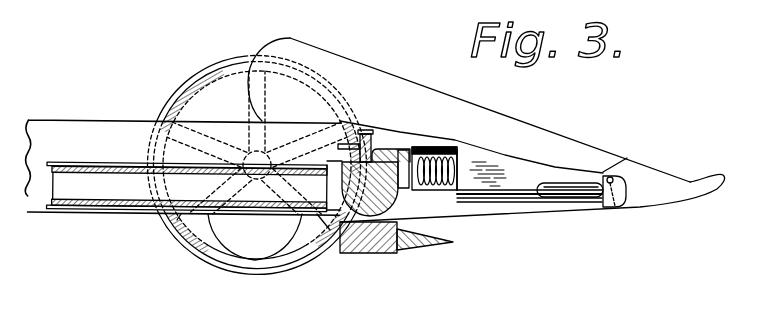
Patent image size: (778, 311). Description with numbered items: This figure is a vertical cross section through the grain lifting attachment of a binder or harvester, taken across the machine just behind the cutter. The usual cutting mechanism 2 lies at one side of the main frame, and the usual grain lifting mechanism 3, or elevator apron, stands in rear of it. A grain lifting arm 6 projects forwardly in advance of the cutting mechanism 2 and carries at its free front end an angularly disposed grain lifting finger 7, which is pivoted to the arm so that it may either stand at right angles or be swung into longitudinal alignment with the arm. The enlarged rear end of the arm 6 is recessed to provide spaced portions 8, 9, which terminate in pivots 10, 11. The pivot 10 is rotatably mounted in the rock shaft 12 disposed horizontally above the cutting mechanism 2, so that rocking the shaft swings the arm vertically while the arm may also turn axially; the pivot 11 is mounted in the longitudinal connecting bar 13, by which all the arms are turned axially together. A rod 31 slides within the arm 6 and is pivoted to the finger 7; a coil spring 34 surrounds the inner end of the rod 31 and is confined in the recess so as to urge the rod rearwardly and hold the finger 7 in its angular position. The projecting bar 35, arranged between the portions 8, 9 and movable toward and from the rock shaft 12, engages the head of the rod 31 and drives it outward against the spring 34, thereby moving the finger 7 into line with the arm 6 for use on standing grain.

The cutting mechanism 2 is at (407, 239).
The grain lifting mechanism 3 is at (110, 182).
The grain lifting arm 6 is at (493, 167).
The grain lifting finger 7 is at (613, 208).
The spaced portion 8 is at (438, 191).
The spaced portion 9 is at (409, 143).
The pivot 10 is at (340, 222).
The pivot 11 is at (346, 141).
The rock shaft 12 is at (379, 156).
The connecting bar 13 is at (363, 131).
The rod 31 is at (561, 190).
The coil spring 34 is at (457, 163).
The projecting bar 35 is at (410, 186).